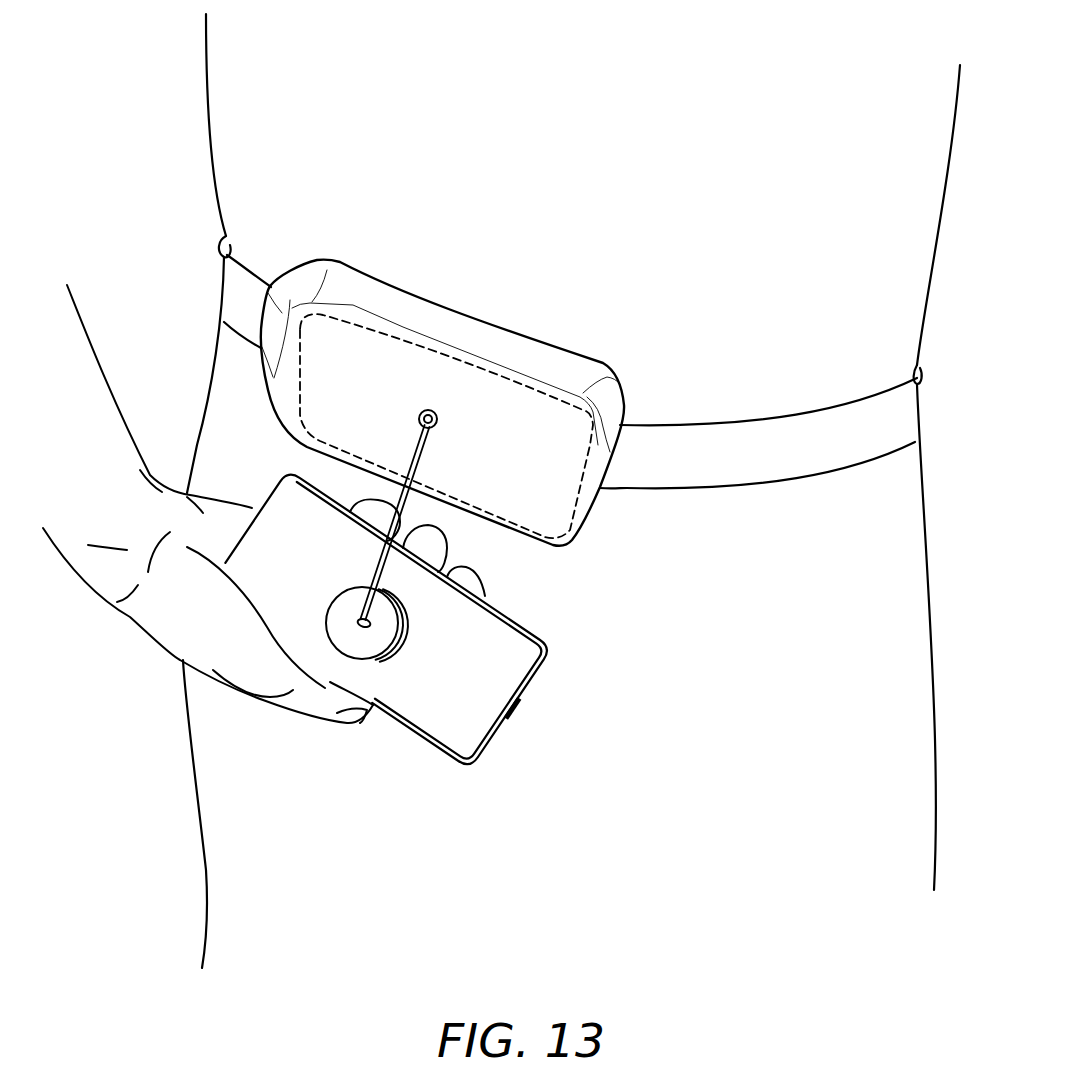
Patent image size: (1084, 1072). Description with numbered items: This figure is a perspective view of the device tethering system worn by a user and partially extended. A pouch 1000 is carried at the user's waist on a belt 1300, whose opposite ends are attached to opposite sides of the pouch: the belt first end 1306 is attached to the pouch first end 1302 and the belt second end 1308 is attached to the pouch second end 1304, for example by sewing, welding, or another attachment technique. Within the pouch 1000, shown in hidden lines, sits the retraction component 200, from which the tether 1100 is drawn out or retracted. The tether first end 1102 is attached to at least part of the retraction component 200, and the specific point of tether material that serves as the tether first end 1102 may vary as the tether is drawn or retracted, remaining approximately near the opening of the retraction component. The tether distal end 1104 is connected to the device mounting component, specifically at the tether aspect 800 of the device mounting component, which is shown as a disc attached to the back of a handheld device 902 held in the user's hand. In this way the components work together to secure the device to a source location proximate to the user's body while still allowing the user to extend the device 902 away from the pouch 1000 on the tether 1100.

The retraction component 200 is at (443, 345).
The tether aspect of the device mounting component 800 is at (383, 635).
The mobile phone 902 is at (520, 667).
The pouch 1000 is at (563, 367).
The tether 1100 is at (400, 503).
The tether first end 1102 is at (420, 432).
The tether distal end 1104 is at (358, 610).
The belt 1300 is at (877, 450).
The pouch first end 1302 is at (600, 460).
The pouch second end 1304 is at (282, 318).
The belt first end 1306 is at (667, 443).
The belt second end 1308 is at (252, 314).